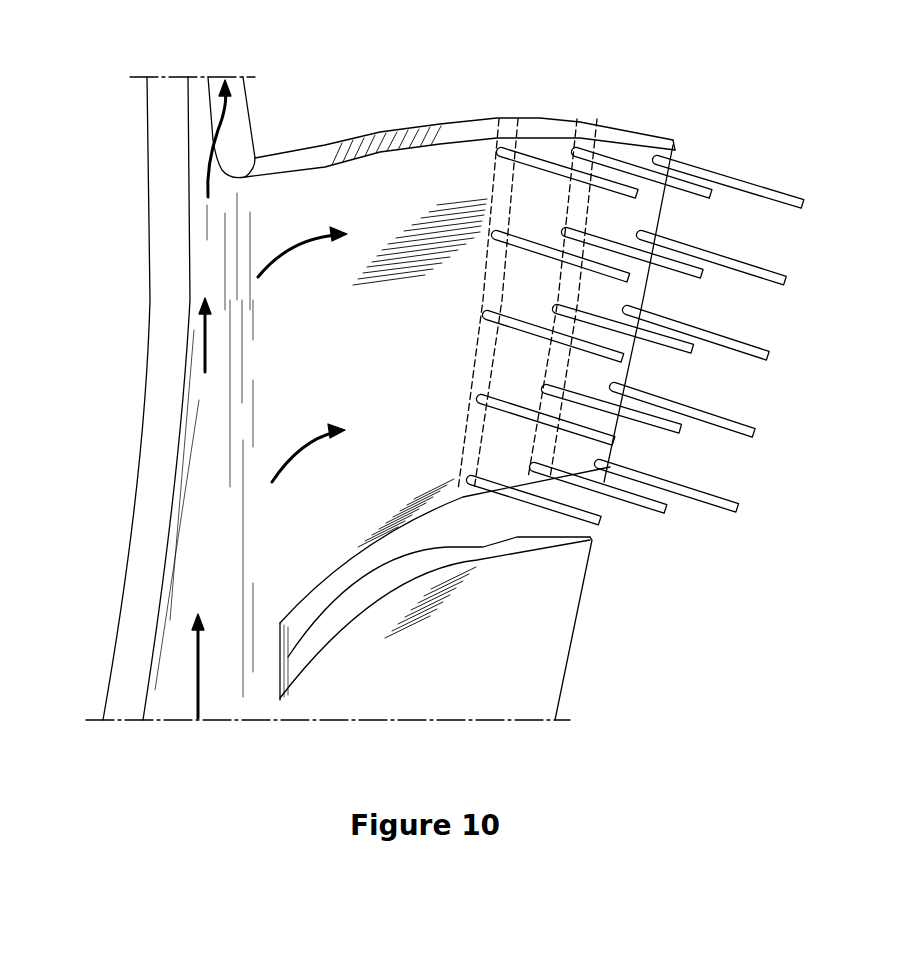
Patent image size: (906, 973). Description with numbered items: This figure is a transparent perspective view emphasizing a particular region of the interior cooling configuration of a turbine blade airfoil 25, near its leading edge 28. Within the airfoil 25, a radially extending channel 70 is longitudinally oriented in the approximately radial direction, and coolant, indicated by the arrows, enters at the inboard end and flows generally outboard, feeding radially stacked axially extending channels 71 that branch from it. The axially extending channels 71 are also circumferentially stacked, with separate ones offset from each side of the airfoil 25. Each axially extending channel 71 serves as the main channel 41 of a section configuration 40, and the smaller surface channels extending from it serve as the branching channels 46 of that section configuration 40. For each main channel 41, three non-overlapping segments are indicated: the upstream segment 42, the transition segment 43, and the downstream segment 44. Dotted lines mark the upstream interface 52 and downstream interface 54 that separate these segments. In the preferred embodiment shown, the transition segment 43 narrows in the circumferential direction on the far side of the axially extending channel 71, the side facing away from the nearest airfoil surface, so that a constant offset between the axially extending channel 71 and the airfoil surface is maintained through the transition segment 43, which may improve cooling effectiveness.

The turbine blade airfoil 25 is at (150, 455).
The leading edge 28 is at (122, 598).
The section configuration 40 is at (546, 76).
The main channel 41 is at (283, 169).
The upstream segment 42 is at (360, 131).
The transition segment 43 is at (504, 124).
The downstream segment 44 is at (528, 124).
The branching channels 46 is at (540, 166).
The upstream interface 52 is at (483, 298).
The downstream interface 54 is at (497, 340).
The radially extending channels 70 is at (197, 266).
The axially extending channels 71 is at (347, 309).